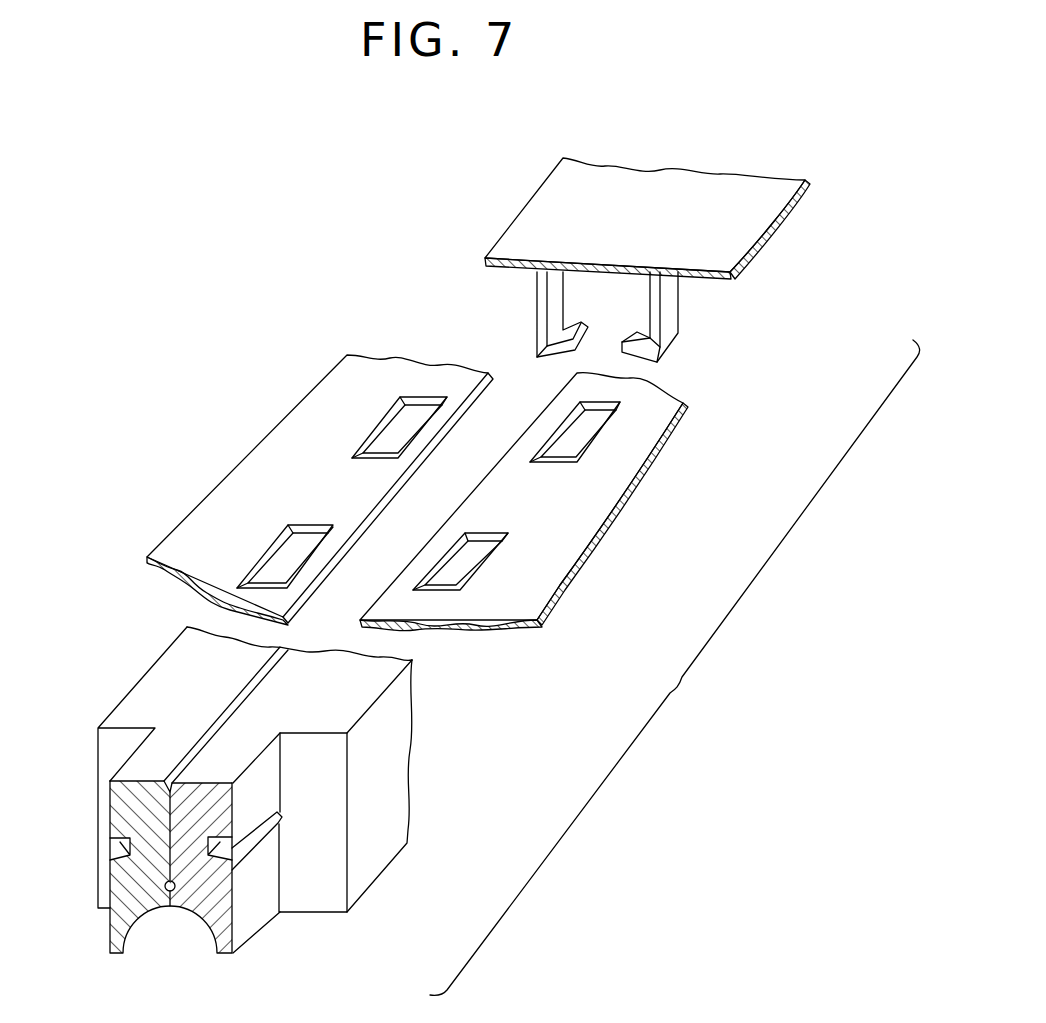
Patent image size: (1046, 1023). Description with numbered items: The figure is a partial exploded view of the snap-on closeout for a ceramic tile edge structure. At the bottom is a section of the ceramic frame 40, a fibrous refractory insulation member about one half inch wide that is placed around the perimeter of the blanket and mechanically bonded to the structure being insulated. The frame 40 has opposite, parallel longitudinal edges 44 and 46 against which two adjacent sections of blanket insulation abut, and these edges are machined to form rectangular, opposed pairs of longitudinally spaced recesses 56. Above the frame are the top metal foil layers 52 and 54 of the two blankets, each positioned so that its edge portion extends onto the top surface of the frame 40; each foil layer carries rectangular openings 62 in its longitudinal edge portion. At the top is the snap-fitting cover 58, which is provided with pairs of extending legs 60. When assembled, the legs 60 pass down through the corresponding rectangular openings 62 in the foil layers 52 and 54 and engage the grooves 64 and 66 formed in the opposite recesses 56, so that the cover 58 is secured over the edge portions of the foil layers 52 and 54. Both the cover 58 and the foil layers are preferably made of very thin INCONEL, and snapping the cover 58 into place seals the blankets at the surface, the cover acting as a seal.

The ceramic frame 40 is at (276, 784).
The longitudinal edge 44 is at (168, 641).
The longitudinal edge 46 is at (407, 687).
The top metal foil layer 52 is at (320, 418).
The top metal foil layer 54 is at (534, 501).
The recess 56 is at (312, 808).
The snap-fitting cover 58 is at (685, 202).
The extending legs 60 is at (670, 307).
The rectangular opening 62 is at (459, 572).
The groove 64 is at (250, 837).
The groove 66 is at (120, 857).